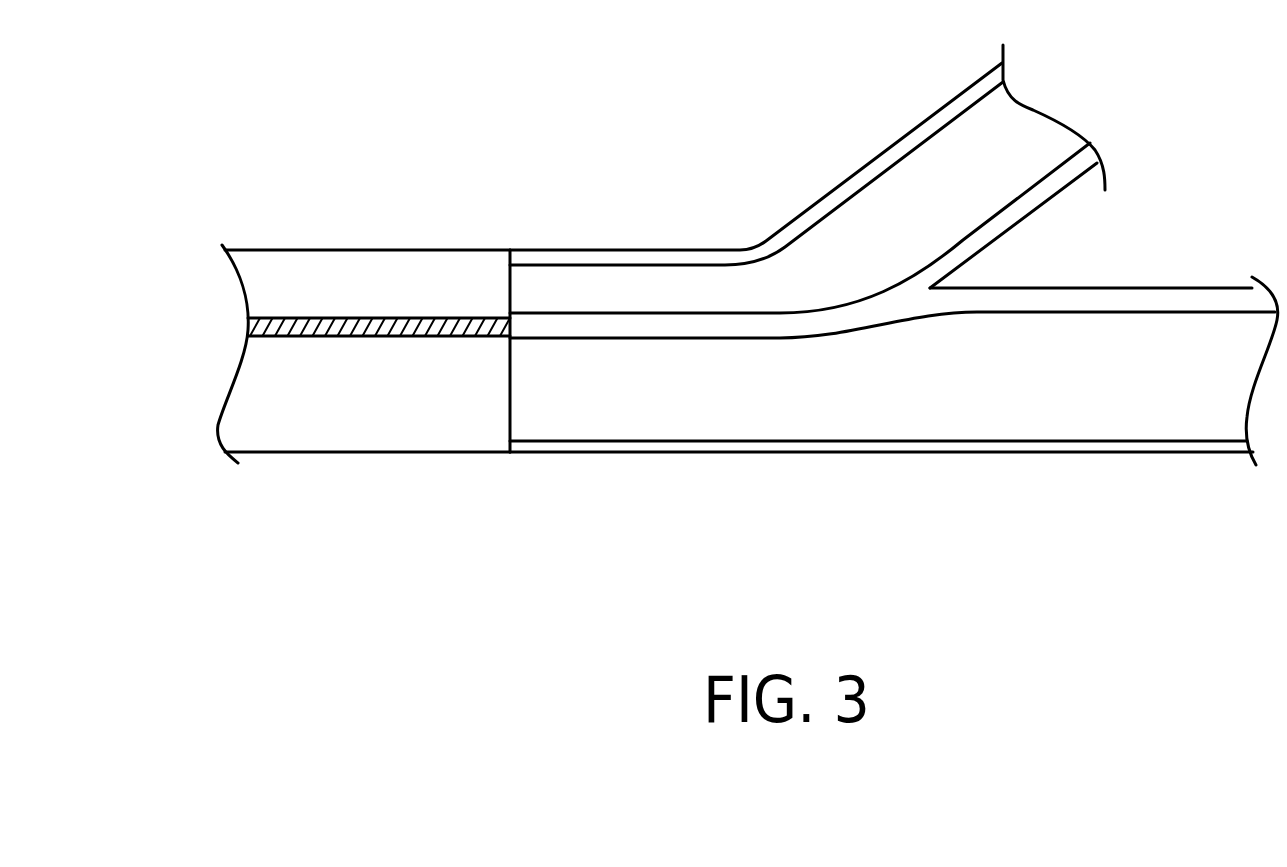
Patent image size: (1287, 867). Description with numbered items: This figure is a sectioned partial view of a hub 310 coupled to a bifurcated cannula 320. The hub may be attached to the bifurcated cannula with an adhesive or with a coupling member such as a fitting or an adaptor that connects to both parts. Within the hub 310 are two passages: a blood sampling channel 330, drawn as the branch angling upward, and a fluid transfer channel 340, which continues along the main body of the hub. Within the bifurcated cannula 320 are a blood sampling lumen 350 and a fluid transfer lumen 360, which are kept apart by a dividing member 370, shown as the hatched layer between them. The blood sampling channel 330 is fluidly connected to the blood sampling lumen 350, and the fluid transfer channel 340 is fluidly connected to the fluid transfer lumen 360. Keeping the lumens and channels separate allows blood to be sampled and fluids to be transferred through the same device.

The hub 310 is at (998, 35).
The bifurcated cannula 320 is at (510, 240).
The blood sampling channel 330 is at (980, 197).
The fluid transfer channel 340 is at (800, 403).
The blood sampling lumen 350 is at (255, 280).
The fluid transfer lumen 360 is at (248, 405).
The dividing member 370 is at (246, 331).